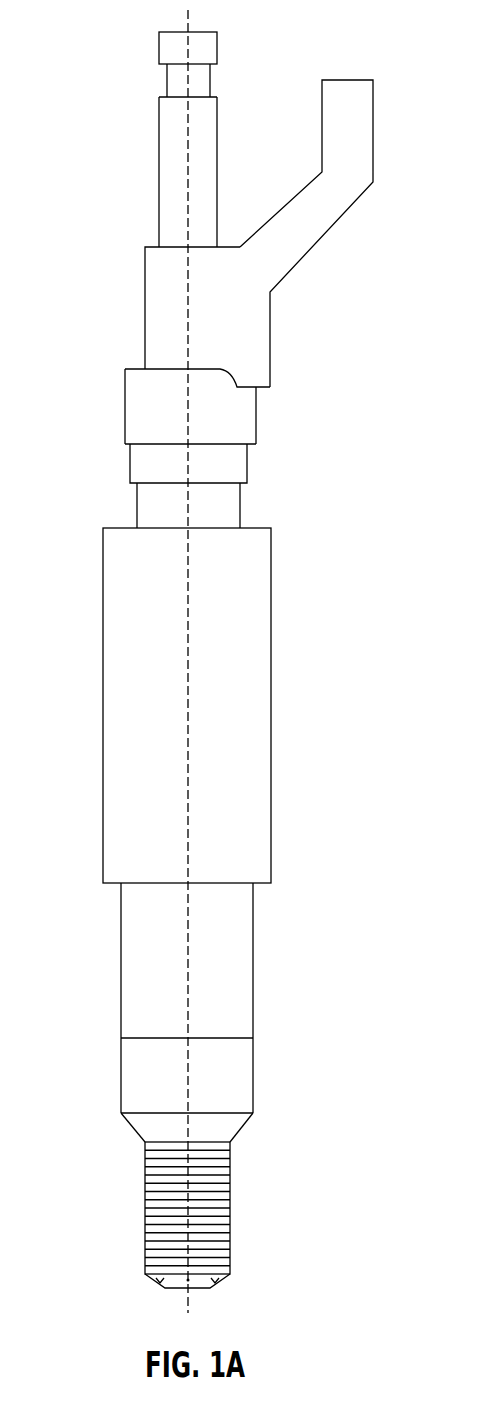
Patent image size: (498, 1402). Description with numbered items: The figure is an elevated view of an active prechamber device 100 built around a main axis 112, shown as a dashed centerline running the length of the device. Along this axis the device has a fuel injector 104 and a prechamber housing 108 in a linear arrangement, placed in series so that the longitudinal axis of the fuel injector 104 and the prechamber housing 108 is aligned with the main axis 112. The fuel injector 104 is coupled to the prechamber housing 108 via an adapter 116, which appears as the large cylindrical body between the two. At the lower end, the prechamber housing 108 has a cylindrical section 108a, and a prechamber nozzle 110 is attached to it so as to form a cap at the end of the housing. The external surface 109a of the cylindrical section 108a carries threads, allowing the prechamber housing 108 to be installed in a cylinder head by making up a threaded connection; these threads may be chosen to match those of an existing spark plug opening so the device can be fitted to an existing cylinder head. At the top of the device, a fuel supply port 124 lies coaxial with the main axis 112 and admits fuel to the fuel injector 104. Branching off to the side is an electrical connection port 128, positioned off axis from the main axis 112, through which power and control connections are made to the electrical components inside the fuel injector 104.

The active prechamber device 100 is at (122, 192).
The fuel injector 104 is at (145, 333).
The prechamber housing 108 is at (253, 1073).
The cylindrical section 108a is at (145, 1200).
The external surface 109a is at (228, 1200).
The prechamber nozzle 110 is at (200, 1288).
The main axis 112 is at (188, 937).
The adapter 116 is at (271, 750).
The fuel supply port 124 is at (178, 32).
The electrical connection port 128 is at (348, 80).